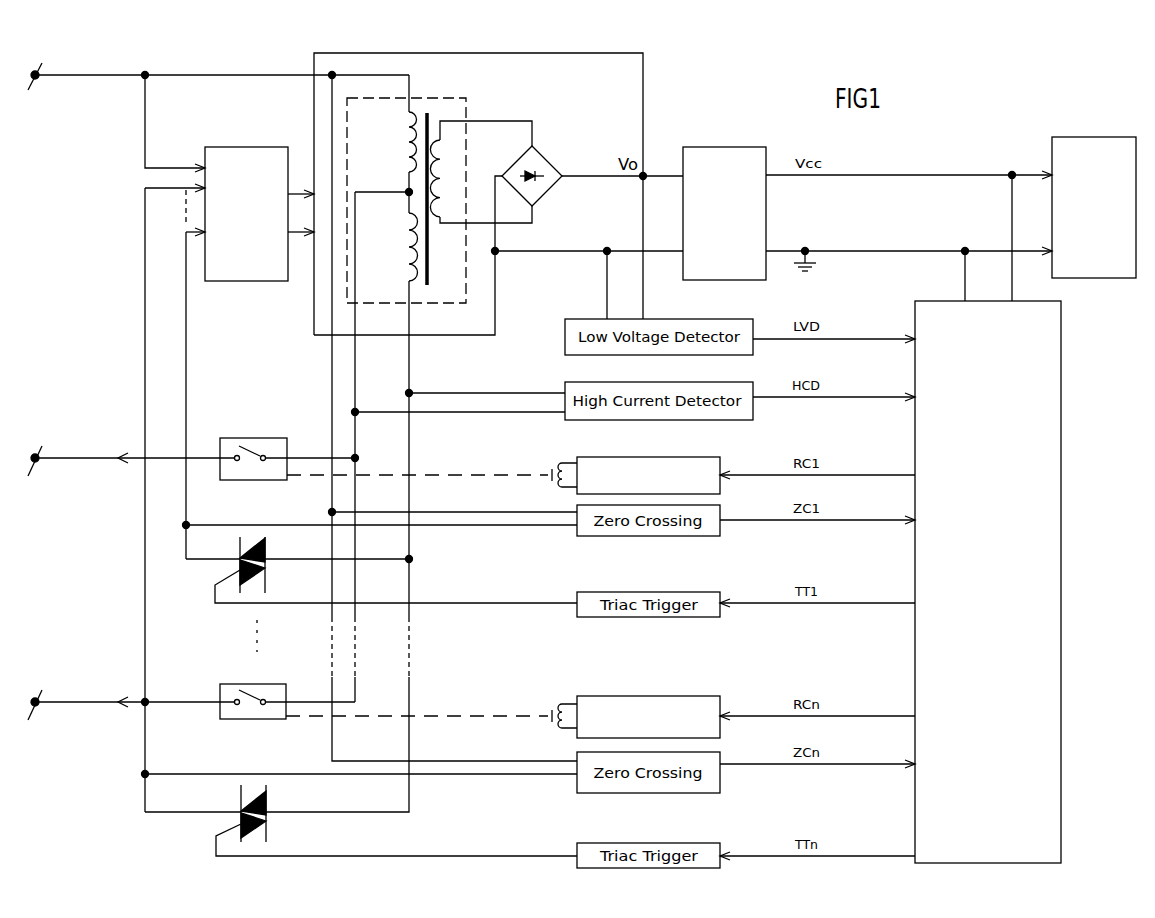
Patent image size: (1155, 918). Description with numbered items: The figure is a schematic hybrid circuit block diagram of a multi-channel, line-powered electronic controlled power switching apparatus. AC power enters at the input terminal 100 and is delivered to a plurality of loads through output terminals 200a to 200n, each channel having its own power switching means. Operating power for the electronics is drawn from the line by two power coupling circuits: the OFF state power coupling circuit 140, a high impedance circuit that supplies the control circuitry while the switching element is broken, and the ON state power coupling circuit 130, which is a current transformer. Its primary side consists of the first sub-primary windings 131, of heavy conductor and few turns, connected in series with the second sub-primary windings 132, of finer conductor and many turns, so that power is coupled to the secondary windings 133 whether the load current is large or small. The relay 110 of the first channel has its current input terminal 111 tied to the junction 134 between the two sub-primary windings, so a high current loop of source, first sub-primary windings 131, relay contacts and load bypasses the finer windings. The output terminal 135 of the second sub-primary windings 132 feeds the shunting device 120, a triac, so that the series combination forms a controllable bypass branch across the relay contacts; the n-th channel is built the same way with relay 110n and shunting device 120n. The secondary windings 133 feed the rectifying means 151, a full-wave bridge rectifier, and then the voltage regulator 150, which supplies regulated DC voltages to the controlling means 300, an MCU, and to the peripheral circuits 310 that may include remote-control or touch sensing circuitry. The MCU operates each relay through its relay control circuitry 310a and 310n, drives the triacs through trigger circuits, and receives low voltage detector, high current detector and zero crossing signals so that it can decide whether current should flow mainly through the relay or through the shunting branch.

The input terminal 100 is at (58, 61).
The OFF state power coupling circuit 140 is at (246, 205).
The ON state power coupling circuit 130 is at (406, 194).
The first sub-primary windings 131 is at (407, 129).
The second sub-primary windings 132 is at (407, 229).
The secondary windings 133 is at (444, 147).
The junction 134 is at (412, 197).
The output terminal of the second sub-primary windings 135 is at (412, 388).
The current input terminal 111 is at (359, 409).
The rectifying means 151 is at (532, 176).
The voltage regulator 150 is at (724, 205).
The peripheral circuits 310 is at (1094, 199).
The controlling means 300 is at (988, 582).
The relay 110 is at (250, 442).
The relay 110n is at (245, 684).
The shunting device 120 is at (396, 568).
The shunting device 120n is at (391, 818).
The output terminal 200a is at (78, 452).
The output terminal 200n is at (80, 699).
The relay control circuitry 310a is at (636, 467).
The relay control circuitry 310n is at (636, 709).